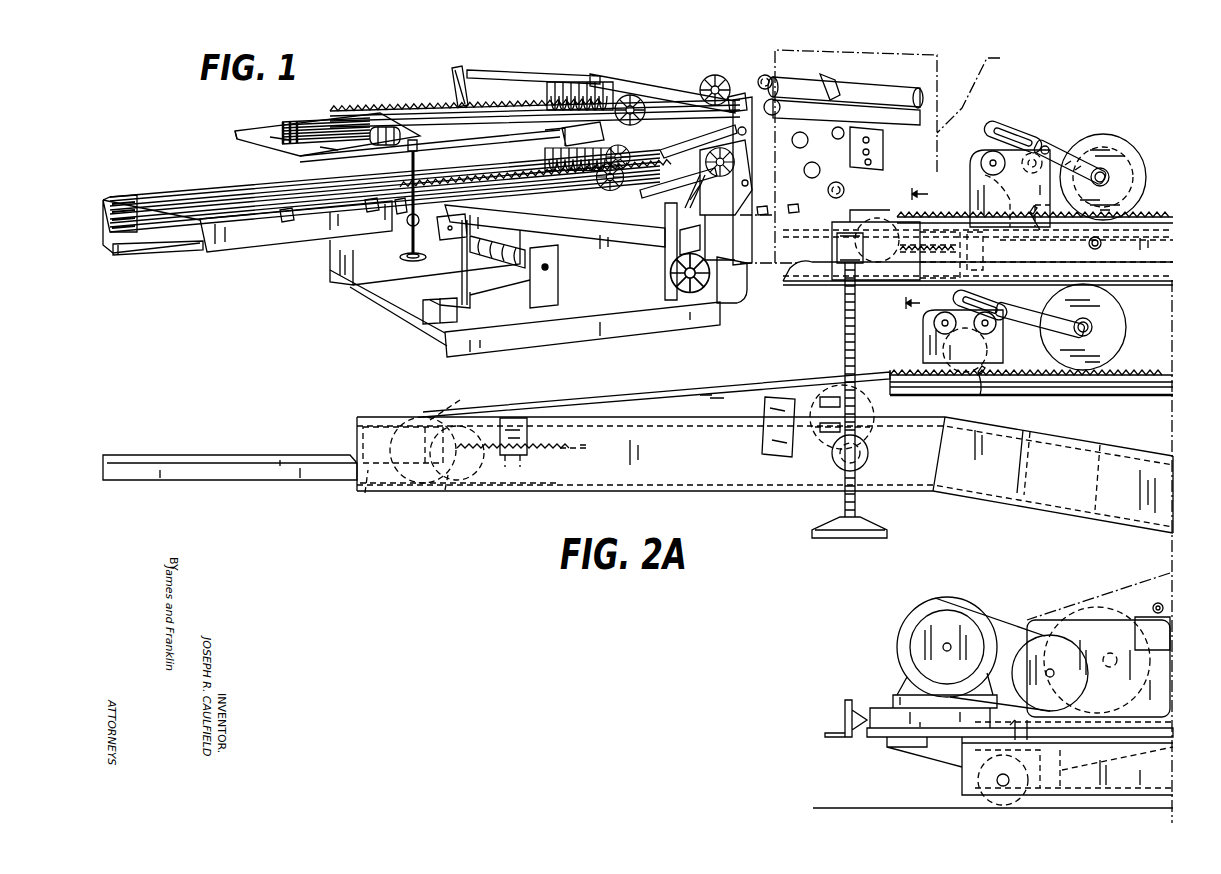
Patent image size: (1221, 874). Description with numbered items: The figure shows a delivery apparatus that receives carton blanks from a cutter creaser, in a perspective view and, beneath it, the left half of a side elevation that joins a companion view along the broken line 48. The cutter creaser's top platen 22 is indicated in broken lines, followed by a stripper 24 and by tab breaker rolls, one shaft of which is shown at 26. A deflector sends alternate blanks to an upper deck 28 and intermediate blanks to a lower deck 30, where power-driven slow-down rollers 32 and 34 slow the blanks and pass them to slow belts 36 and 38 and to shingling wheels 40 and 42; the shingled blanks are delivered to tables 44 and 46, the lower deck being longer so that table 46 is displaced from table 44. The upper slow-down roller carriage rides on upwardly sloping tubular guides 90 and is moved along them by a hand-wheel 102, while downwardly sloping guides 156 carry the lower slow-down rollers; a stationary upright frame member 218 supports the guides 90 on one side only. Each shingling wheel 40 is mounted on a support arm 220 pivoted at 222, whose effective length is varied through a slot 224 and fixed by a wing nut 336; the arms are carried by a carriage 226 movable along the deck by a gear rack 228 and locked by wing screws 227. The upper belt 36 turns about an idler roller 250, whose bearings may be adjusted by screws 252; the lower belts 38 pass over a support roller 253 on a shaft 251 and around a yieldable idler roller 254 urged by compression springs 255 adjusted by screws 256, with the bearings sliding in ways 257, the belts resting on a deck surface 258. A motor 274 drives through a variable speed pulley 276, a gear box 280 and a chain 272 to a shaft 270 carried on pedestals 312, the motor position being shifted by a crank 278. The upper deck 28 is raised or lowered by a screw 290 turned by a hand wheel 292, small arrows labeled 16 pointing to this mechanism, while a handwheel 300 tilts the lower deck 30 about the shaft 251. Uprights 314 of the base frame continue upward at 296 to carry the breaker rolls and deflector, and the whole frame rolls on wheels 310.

In FIG. 2A, the section line 16 is at (929, 247).
In FIG. 1, the top platen 22 is at (990, 59).
In FIG. 1, the stripper 24 is at (770, 233).
In FIG. 1, the tab breaker roll 26 is at (748, 133).
In FIG. 1, the upper deck 28 is at (521, 150).
In FIG. 1, the lower deck 30 is at (541, 200).
In FIG. 2A, the lower deck 30 is at (1052, 416).
In FIG. 1, the upper slow-down rollers 32 is at (735, 102).
In FIG. 1, the lower slow-down rollers 34 is at (708, 181).
In FIG. 1, the upper slow belts 36 is at (385, 127).
In FIG. 2A, the upper slow belts 36 is at (884, 216).
In FIG. 1, the lower slow belts 38 is at (206, 224).
In FIG. 2A, the lower slow belts 38 is at (417, 412).
In FIG. 1, the shingling wheel 40 is at (576, 88).
In FIG. 2A, the shingling wheel 40 is at (1136, 157).
In FIG. 1, the shingling wheel 42 is at (586, 171).
In FIG. 2A, the shingling wheel 42 is at (1121, 316).
In FIG. 1, the upper delivery table 44 is at (250, 133).
In FIG. 2A, the upper delivery table 44 is at (806, 280).
In FIG. 1, the lower delivery table 46 is at (166, 252).
In FIG. 2A, the lower delivery table 46 is at (203, 458).
In FIG. 2A, the broken line 48 is at (1175, 546).
In FIG. 1, the tubular guides 90 is at (622, 80).
In FIG. 1, the hand-wheel 102 is at (723, 77).
In FIG. 1, the downwardly sloping guides 156 is at (699, 194).
In FIG. 1, the stationary upright frame member 218 is at (453, 90).
In FIG. 2A, the support arm 220 is at (1066, 150).
In FIG. 2A, the pivot 222 is at (1041, 135).
In FIG. 2A, the slot 224 is at (1004, 126).
In FIG. 2A, the carriage 226 is at (971, 166).
In FIG. 2A, the wing screws 227 is at (1038, 230).
In FIG. 2A, the gear rack 228 is at (968, 163).
In FIG. 2A, the idler roller 250 is at (877, 215).
In FIG. 1, the shaft 251 is at (397, 207).
In FIG. 2A, the shaft 251 is at (833, 420).
In FIG. 2A, the screws 252 is at (1009, 258).
In FIG. 2A, the support roller 253 is at (831, 385).
In FIG. 2A, the idler roller 254 is at (432, 414).
In FIG. 2A, the compression springs 255 is at (446, 491).
In FIG. 2A, the screws 256 is at (590, 457).
In FIG. 2A, the ways 257 is at (365, 494).
In FIG. 2A, the deck surface 258 is at (654, 400).
In FIG. 1, the shaft 270 is at (549, 268).
In FIG. 2A, the chain 272 is at (1146, 585).
In FIG. 2A, the motor 274 is at (951, 600).
In FIG. 2A, the variable speed drive pulley 276 is at (963, 632).
In FIG. 2A, the crank 278 is at (843, 722).
In FIG. 2A, the gear box 280 is at (1038, 620).
In FIG. 1, the screw 290 is at (420, 158).
In FIG. 2A, the screw 290 is at (857, 343).
In FIG. 1, the hand wheel 292 is at (406, 260).
In FIG. 2A, the hand wheel 292 is at (888, 532).
In FIG. 1, the side frame members 296 is at (749, 184).
In FIG. 1, the handwheel 300 is at (672, 276).
In FIG. 2A, the wheels 310 is at (1006, 805).
In FIG. 1, the upright pedestals 312 is at (546, 298).
In FIG. 1, the uprights 314 is at (668, 249).
In FIG. 2A, the wing nut 336 is at (1047, 146).